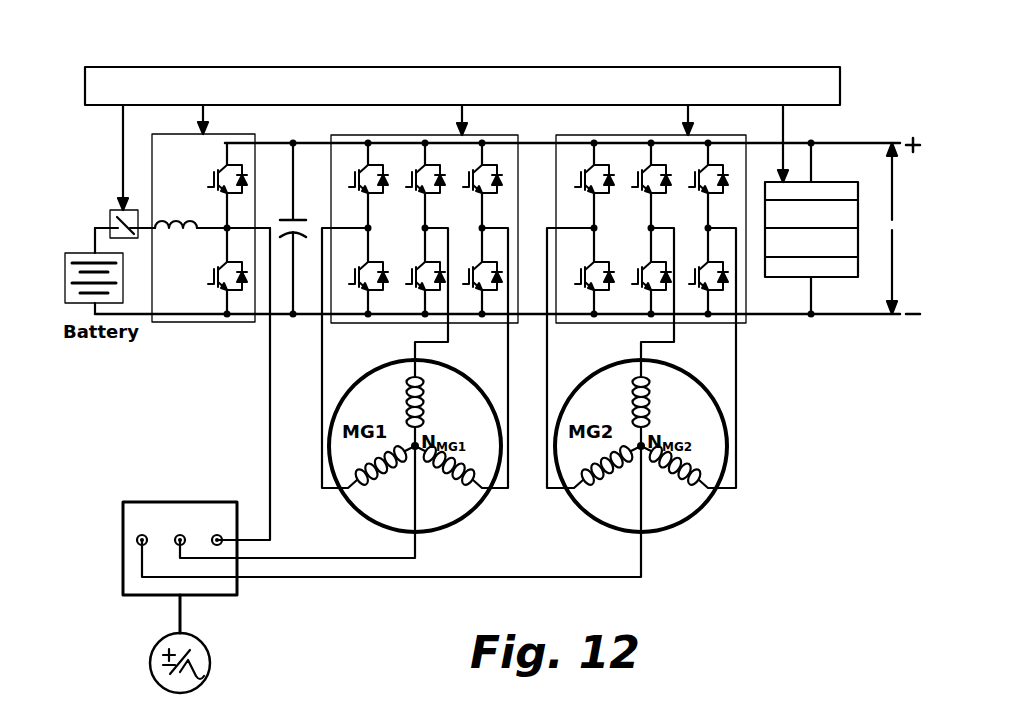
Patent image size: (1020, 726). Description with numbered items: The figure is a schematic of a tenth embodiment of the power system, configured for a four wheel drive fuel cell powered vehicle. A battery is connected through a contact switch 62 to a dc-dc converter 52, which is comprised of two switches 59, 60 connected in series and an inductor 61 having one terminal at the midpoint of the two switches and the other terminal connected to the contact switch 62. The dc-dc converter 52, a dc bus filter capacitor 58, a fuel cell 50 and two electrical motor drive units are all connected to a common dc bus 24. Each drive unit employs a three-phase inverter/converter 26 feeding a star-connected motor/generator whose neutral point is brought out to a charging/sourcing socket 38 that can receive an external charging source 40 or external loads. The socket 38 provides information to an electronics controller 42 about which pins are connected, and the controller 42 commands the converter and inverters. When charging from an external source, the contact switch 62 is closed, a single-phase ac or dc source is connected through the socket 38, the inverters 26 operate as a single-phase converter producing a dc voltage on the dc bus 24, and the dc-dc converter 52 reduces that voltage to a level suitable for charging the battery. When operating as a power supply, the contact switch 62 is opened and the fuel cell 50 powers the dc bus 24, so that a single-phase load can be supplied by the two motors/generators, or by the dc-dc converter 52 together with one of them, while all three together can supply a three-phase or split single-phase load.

The dc bus 24 is at (890, 230).
The inverter/converter 26 is at (418, 135).
The charging/sourcing socket 38 is at (167, 500).
The external charging source 40 is at (207, 652).
The electronics controller 42 is at (797, 85).
The fuel cell 50 is at (837, 277).
The dc-dc converter 52 is at (215, 236).
The filter capacitor 58 is at (290, 232).
The switch 59 is at (225, 173).
The switch 60 is at (222, 290).
The inductor 61 is at (182, 233).
The contact switch 62 is at (121, 205).